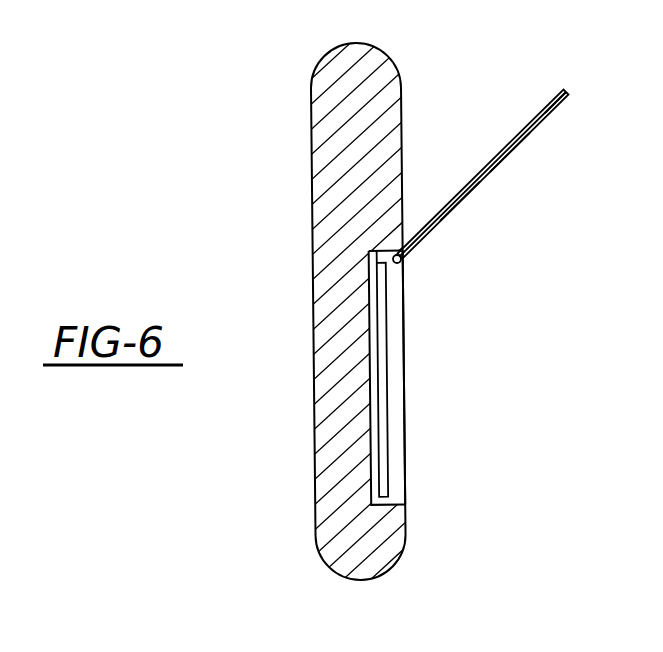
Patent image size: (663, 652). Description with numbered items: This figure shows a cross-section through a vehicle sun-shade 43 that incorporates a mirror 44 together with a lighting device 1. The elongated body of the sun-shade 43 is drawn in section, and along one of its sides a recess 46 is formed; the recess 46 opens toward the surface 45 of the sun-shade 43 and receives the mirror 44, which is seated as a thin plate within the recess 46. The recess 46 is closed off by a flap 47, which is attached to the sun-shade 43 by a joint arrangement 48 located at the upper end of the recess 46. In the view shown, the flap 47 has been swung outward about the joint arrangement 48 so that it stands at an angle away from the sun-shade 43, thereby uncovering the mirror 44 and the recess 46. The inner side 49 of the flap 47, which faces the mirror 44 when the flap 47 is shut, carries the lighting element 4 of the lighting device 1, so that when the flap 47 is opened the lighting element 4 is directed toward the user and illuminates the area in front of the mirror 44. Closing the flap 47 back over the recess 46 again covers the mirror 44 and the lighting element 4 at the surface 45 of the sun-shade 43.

The lighting device 1 is at (575, 120).
The lighting element 4 is at (509, 154).
The sun-shade 43 is at (319, 138).
The mirror 44 is at (384, 382).
The surface 45 is at (403, 478).
The recess 46 is at (425, 451).
The flap 47 is at (500, 130).
The joint arrangement 48 is at (414, 267).
The inner side 49 is at (463, 201).